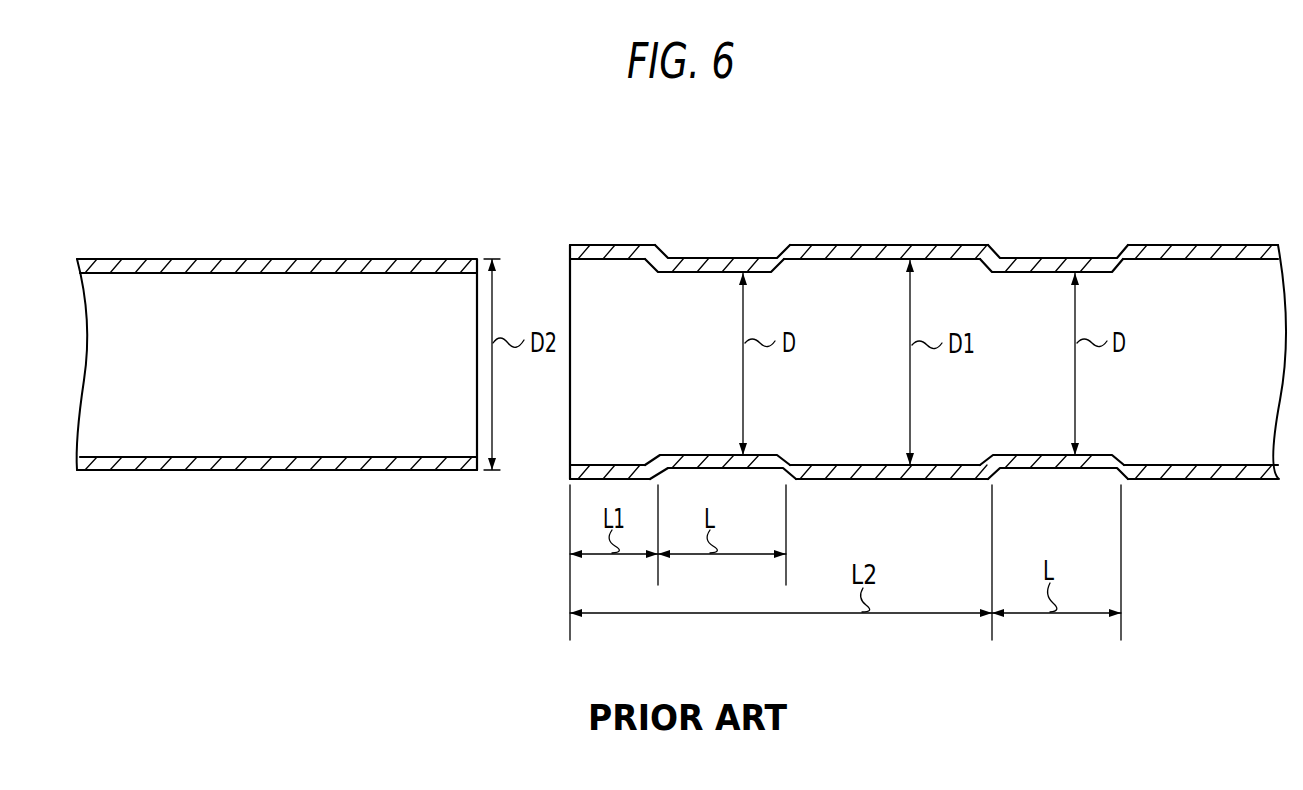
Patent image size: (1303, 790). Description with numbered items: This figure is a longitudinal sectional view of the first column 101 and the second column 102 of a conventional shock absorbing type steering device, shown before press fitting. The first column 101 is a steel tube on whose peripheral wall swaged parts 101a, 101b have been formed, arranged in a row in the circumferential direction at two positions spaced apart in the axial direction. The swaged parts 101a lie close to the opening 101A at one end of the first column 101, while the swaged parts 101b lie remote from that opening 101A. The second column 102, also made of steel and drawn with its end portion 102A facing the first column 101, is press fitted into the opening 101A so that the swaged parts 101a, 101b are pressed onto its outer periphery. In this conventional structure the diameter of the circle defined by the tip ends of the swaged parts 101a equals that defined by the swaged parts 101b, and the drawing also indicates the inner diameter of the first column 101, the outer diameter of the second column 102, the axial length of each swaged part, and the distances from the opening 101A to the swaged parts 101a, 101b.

The first column 101 is at (888, 245).
The swaged parts close to the opening 101a is at (717, 257).
The swaged parts remote from the opening 101b is at (1062, 258).
The opening 101A is at (570, 432).
The second column 102 is at (188, 258).
The end portion of pipe 102 102A is at (290, 471).